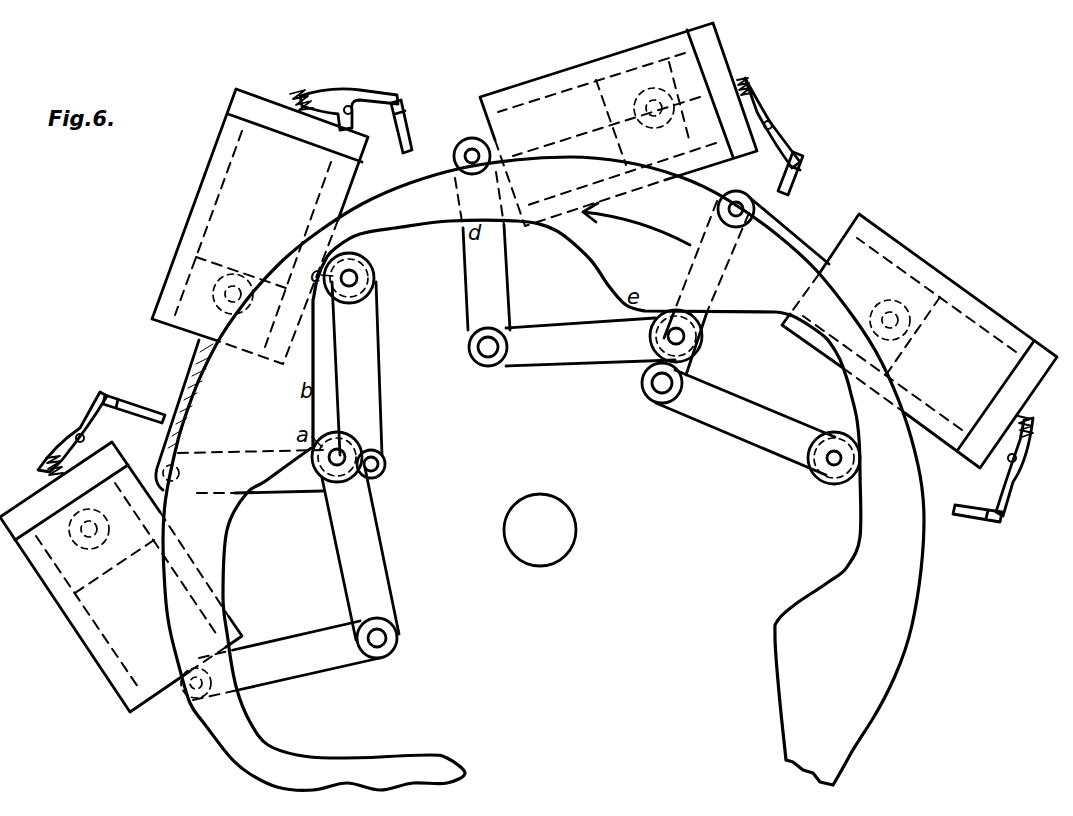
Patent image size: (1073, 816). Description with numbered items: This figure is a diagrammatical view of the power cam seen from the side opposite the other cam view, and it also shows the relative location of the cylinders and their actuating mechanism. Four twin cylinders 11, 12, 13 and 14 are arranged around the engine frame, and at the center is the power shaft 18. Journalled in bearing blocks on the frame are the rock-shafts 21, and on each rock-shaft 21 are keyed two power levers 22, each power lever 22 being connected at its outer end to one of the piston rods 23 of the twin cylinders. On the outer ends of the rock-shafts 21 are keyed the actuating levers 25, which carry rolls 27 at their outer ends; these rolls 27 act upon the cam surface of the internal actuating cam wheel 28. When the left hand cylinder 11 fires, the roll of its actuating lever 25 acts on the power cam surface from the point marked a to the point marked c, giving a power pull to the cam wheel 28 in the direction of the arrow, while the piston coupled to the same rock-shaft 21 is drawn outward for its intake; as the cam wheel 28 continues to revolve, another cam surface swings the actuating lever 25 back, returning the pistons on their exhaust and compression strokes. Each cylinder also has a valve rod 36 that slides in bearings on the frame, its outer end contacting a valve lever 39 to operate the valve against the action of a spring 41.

The twin cylinder 11 is at (82, 640).
The twin cylinder 12 is at (595, 60).
The twin cylinder 13 is at (985, 305).
The twin cylinder 14 is at (205, 178).
The power shaft 18 is at (575, 548).
The rock-shaft 21 is at (388, 468).
The power lever 22 is at (508, 292).
The piston rod 23 is at (196, 347).
The actuating lever 25 is at (382, 375).
The roll 27 is at (377, 276).
The internal actuating cam wheel 28 is at (915, 605).
The valve rod 36 is at (413, 127).
The valve lever 39 is at (345, 98).
The spring 41 is at (296, 84).